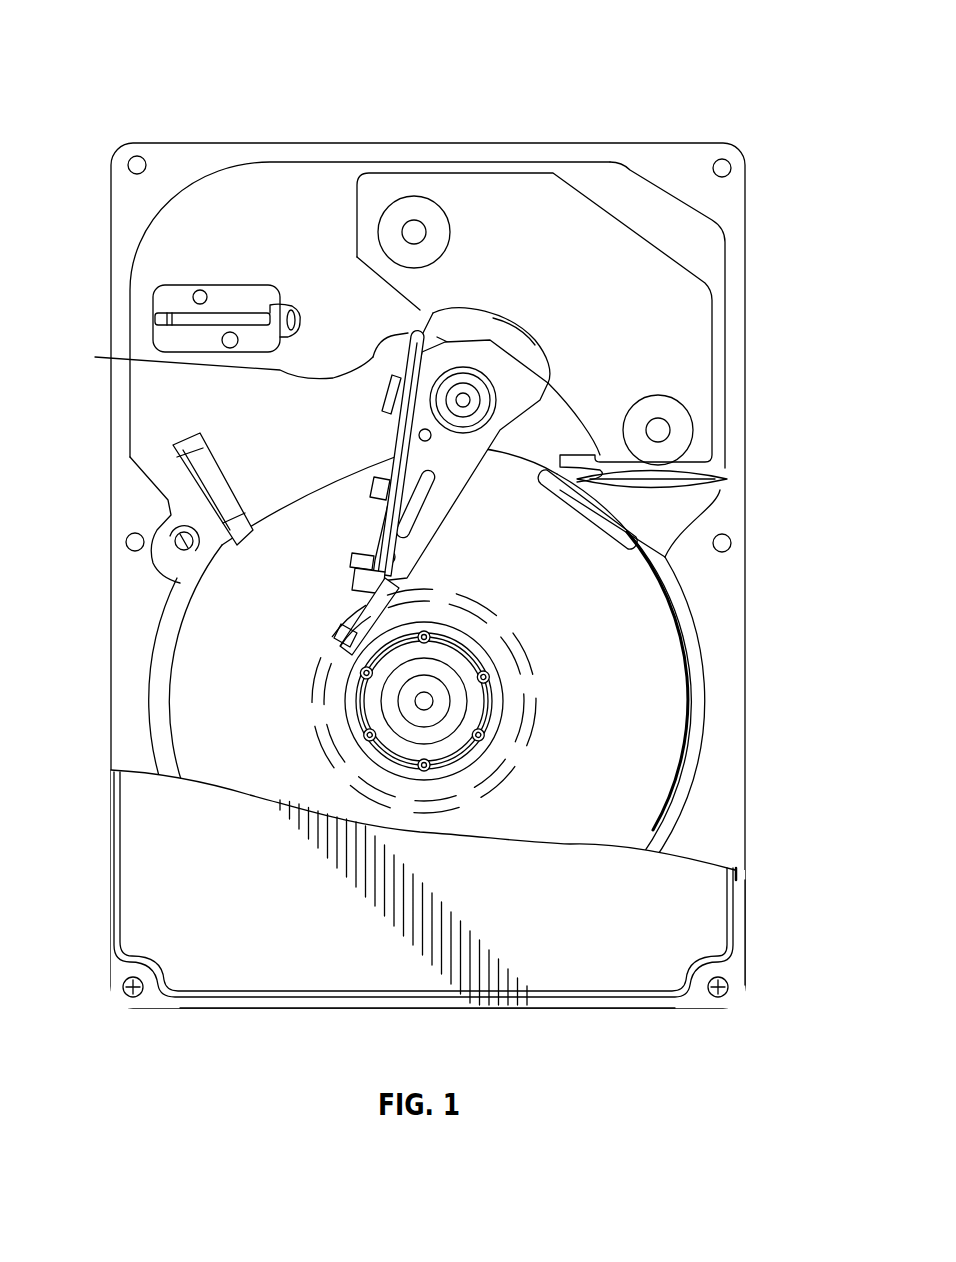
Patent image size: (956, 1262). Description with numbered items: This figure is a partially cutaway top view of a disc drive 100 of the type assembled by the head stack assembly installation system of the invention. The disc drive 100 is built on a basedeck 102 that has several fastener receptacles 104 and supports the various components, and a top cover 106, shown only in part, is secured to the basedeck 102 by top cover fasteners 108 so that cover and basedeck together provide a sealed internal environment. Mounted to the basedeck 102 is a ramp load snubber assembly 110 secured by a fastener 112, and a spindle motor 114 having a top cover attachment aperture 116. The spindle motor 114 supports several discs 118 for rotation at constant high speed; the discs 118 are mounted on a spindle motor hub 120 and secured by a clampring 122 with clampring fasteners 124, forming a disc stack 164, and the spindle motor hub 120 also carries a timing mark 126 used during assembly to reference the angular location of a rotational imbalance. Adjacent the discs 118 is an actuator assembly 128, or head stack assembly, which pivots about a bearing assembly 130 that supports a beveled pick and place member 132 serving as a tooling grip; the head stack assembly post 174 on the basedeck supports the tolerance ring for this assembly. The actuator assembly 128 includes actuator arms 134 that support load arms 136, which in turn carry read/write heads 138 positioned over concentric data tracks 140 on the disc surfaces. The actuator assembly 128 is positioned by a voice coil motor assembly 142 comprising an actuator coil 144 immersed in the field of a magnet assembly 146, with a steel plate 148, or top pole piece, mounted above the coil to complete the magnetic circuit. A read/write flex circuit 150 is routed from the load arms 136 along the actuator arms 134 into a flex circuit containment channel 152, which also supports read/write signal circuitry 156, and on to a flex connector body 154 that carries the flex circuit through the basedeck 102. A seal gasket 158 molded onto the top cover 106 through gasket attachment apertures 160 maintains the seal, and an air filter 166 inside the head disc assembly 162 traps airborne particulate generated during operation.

The disc drive 100 is at (390, 60).
The basedeck 102 is at (270, 213).
The fastener receptacles 104 is at (133, 158).
The top cover 106 is at (155, 852).
The top cover fasteners 108 is at (126, 992).
The ramp load snubber assembly 110 is at (175, 444).
The fastener 112 is at (165, 536).
The spindle motor 114 is at (455, 676).
The top cover attachment aperture 116 is at (440, 678).
The discs 118 is at (620, 607).
The spindle motor hub 120 is at (452, 710).
The clampring 122 is at (383, 725).
The clampring fasteners 124 is at (372, 740).
The timing mark 126 is at (370, 713).
The actuator assembly 128 is at (486, 470).
The bearing assembly 130 is at (548, 430).
The beveled pick and place member 132 is at (447, 410).
The actuator arms 134 is at (395, 541).
The load arms 136 is at (352, 600).
The read/write heads 138 is at (343, 631).
The data tracks 140 is at (516, 752).
The voice coil motor assembly 142 is at (690, 249).
The actuator coil 144 is at (440, 318).
The magnet assembly 146 is at (464, 207).
The steel plate 148 is at (695, 347).
The read/write flex circuit 150 is at (360, 527).
The flex circuit containment channel 152 is at (374, 482).
The flex connector body 154 is at (173, 340).
The read/write signal circuitry 156 is at (390, 393).
The seal gasket 158 is at (741, 912).
The gasket attachment apertures 160 is at (738, 880).
The head disc assembly 162 is at (378, 1022).
The disc stack 164 is at (702, 658).
The air filter 166 is at (683, 478).
The head stack assembly post 174 is at (493, 390).